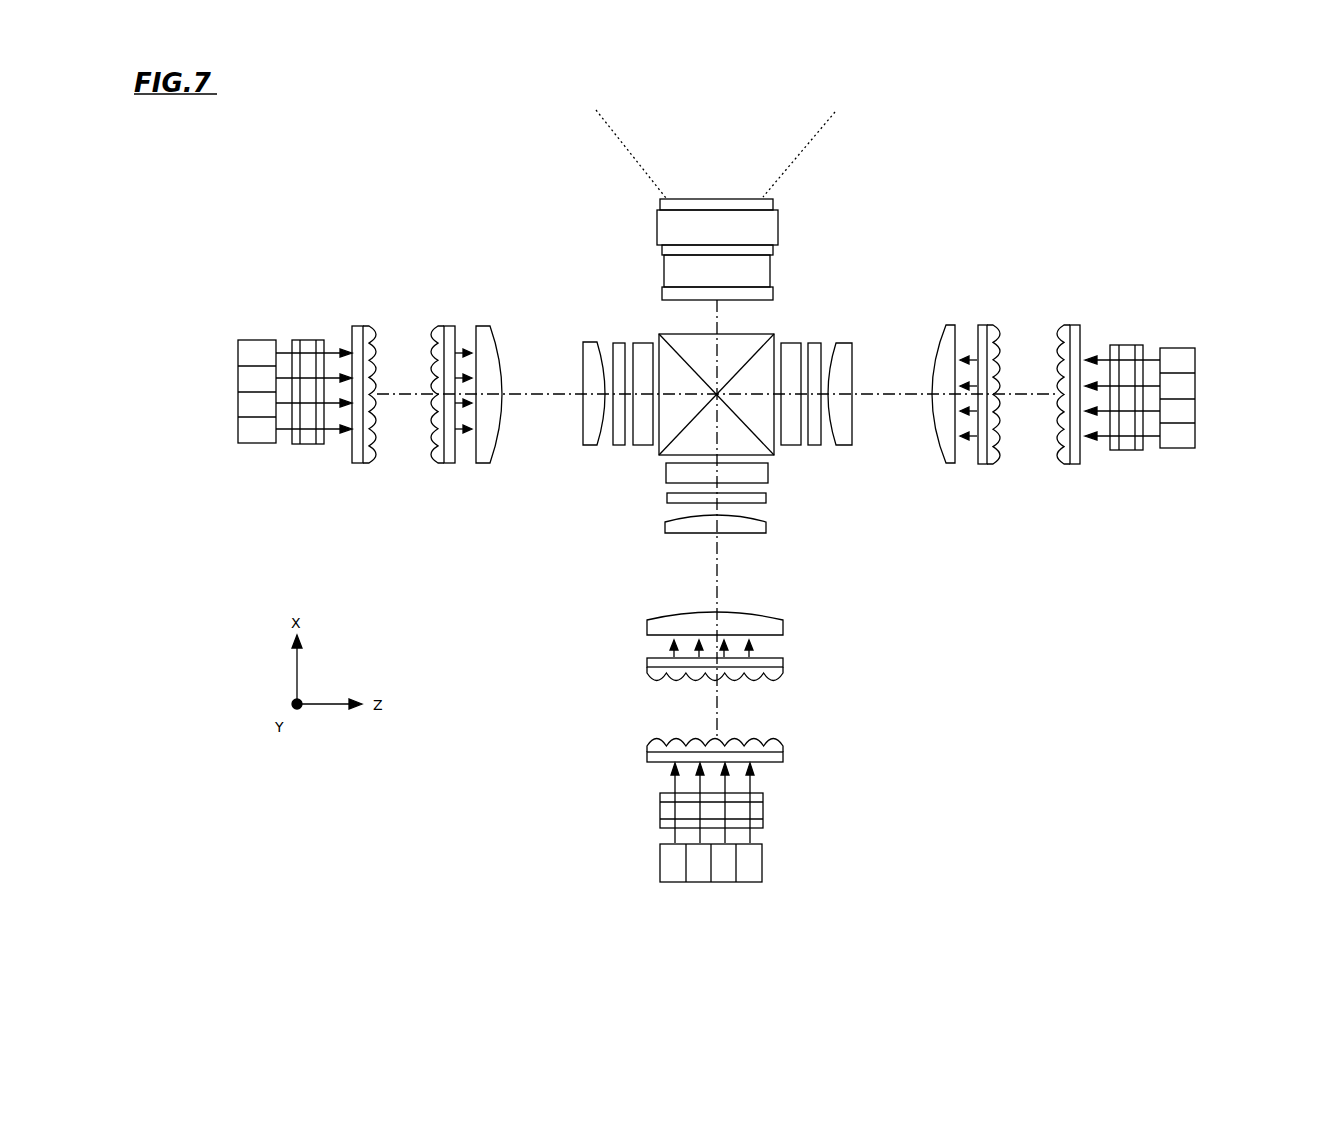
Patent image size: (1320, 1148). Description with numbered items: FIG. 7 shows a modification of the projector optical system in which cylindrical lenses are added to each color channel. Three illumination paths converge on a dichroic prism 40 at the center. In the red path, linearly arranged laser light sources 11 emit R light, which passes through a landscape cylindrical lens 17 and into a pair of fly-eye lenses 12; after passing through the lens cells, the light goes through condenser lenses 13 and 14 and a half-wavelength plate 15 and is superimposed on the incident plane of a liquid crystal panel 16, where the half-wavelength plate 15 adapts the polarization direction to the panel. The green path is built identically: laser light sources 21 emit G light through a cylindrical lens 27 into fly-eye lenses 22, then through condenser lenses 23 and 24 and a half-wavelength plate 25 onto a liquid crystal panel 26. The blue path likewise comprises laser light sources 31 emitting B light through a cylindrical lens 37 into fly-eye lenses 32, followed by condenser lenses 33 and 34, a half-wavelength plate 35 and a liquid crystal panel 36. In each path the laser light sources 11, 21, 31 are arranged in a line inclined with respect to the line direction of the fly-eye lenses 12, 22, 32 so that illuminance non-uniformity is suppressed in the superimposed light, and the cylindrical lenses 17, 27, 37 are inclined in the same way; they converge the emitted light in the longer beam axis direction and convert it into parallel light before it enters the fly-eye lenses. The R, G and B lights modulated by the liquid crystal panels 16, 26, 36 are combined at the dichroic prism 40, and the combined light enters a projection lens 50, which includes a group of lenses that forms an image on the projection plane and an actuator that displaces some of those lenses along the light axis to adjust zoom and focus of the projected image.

The laser light sources 11 is at (228, 332).
The fly-eye lenses 12 is at (457, 308).
The condenser lens 13 is at (487, 465).
The condenser lens 14 is at (583, 342).
The half-wavelength plate 15 is at (617, 447).
The liquid crystal panel 16 is at (643, 447).
The cylindrical lens 17 is at (308, 447).
The laser light sources 21 is at (778, 893).
The fly-eye lenses 22 is at (630, 658).
The condenser lens 23 is at (783, 637).
The condenser lens 24 is at (673, 527).
The half-wavelength plate 25 is at (763, 505).
The liquid crystal panel 26 is at (768, 477).
The cylindrical lens 27 is at (768, 817).
The laser light sources 31 is at (1207, 332).
The fly-eye lenses 32 is at (1083, 309).
The condenser lens 33 is at (947, 465).
The condenser lens 34 is at (843, 343).
The half-wavelength plate 35 is at (812, 447).
The liquid crystal panel 36 is at (790, 337).
The cylindrical lens 37 is at (1127, 452).
The dichroic prism 40 is at (683, 353).
The projection lens 50 is at (762, 235).